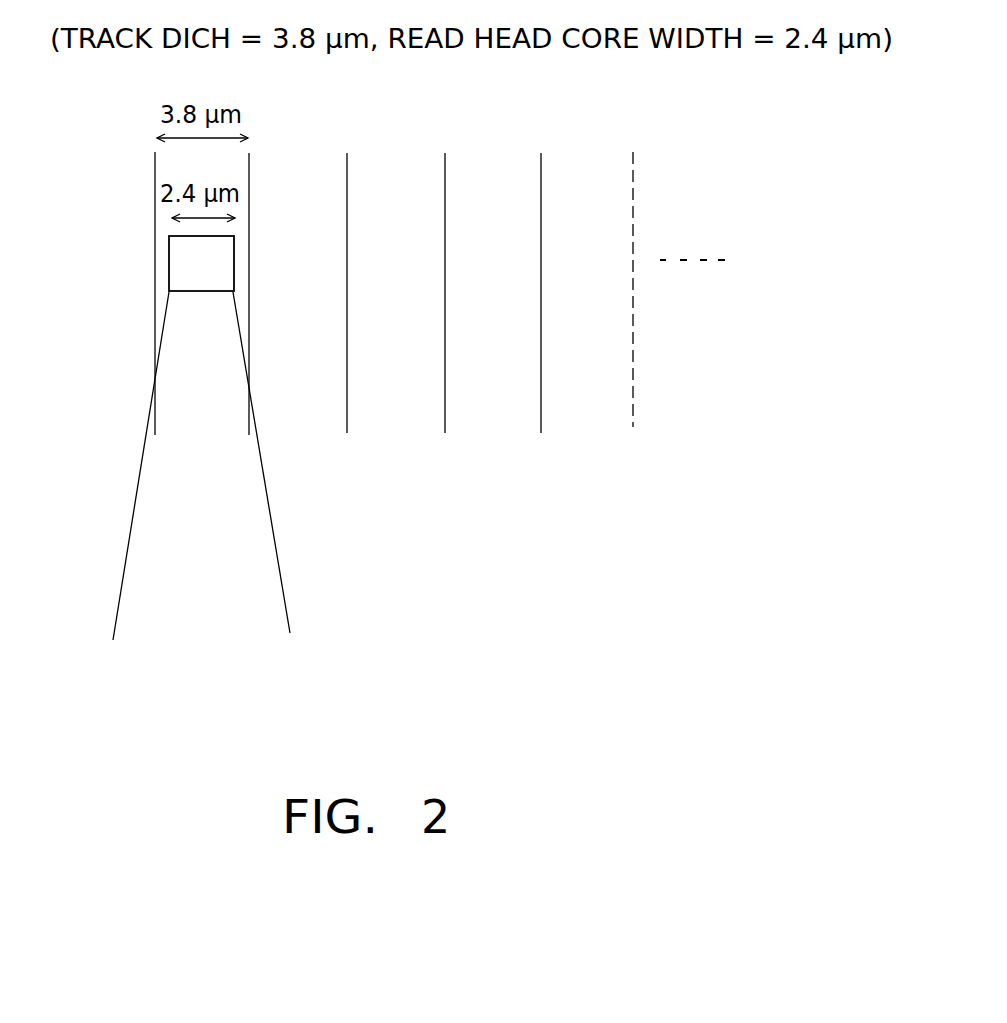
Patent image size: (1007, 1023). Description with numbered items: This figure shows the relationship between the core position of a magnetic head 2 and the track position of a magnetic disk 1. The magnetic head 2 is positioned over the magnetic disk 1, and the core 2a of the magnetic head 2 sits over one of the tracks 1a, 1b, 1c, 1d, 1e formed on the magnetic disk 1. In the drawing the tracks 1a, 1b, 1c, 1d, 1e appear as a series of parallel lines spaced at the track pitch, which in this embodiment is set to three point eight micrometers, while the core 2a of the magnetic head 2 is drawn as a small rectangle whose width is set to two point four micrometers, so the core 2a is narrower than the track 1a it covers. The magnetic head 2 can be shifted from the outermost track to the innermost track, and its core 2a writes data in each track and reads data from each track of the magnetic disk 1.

The magnetic disk 1 is at (484, 506).
The track 1a is at (218, 172).
The track 1b is at (310, 168).
The track 1c is at (400, 168).
The track 1d is at (503, 165).
The track 1e is at (598, 162).
The magnetic head 2 is at (159, 478).
The core 2a is at (187, 263).